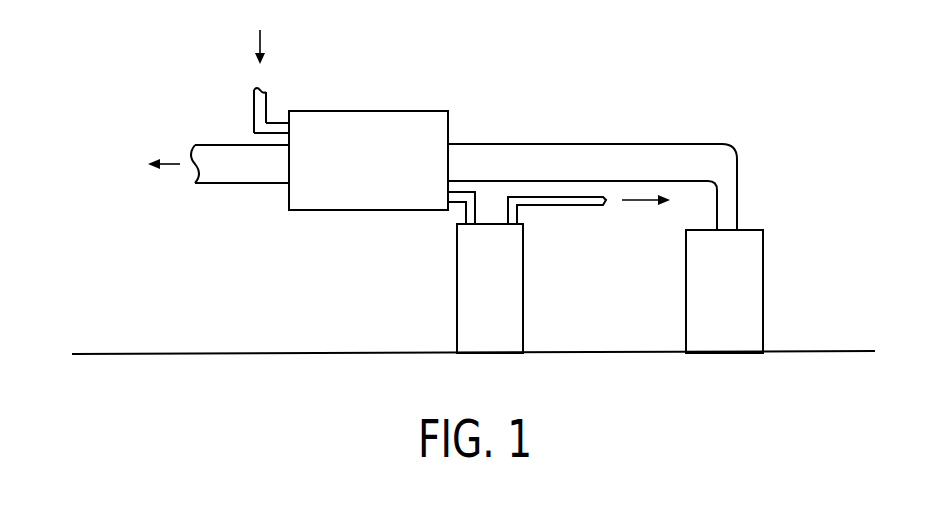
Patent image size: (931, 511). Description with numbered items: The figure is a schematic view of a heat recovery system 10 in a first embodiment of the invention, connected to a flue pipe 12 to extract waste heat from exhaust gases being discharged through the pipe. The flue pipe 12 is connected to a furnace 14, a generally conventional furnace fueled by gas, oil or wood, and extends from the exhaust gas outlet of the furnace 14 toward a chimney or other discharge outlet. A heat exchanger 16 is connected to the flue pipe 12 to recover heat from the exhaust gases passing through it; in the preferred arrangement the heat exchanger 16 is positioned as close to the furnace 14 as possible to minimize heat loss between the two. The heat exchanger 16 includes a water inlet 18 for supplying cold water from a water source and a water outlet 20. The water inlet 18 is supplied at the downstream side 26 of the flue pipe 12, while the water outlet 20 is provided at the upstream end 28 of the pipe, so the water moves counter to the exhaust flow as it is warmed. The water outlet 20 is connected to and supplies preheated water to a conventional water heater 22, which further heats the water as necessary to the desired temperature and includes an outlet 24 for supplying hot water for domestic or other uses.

The heat recovery system 10 is at (574, 80).
The flue pipe 12 is at (202, 198).
The furnace 14 is at (763, 288).
The heat exchanger 16 is at (369, 100).
The water inlet 18 is at (268, 100).
The water outlet 20 is at (462, 212).
The water heater 22 is at (457, 268).
The outlet 24 is at (560, 207).
The downstream side 26 is at (288, 184).
The upstream end 28 is at (449, 131).